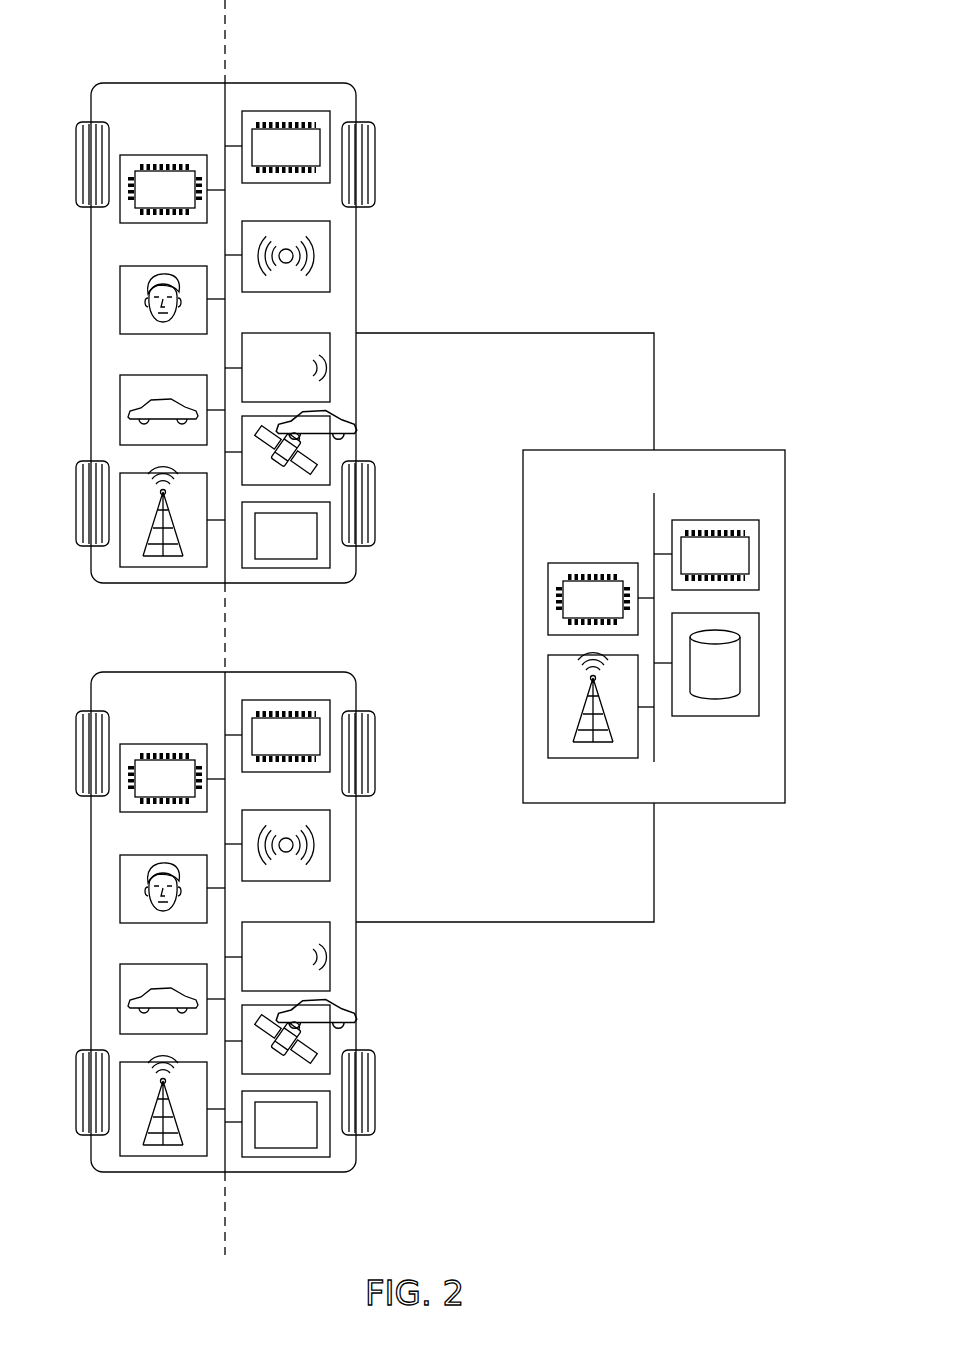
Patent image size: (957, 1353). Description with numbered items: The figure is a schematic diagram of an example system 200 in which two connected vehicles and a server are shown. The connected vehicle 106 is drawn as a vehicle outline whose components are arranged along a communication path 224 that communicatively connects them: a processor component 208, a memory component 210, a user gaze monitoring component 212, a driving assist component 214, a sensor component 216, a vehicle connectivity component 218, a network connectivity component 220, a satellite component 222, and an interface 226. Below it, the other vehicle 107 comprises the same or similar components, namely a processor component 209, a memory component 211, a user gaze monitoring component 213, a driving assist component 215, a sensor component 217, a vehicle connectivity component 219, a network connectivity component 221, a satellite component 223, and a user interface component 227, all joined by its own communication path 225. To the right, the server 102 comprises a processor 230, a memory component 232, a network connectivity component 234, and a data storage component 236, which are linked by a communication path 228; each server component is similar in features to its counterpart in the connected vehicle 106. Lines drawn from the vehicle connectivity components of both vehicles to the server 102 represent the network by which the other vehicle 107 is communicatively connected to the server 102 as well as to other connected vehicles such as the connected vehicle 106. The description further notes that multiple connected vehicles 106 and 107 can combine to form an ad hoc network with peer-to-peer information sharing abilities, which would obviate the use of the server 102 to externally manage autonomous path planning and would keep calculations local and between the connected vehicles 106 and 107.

The server 102 is at (723, 450).
The connected vehicle 106 is at (140, 83).
The other vehicle 107 is at (225, 895).
The system 200 is at (676, 78).
The processor component 208 is at (165, 155).
The processor component 209 is at (172, 750).
The memory component 210 is at (285, 111).
The memory component 211 is at (280, 705).
The user gaze monitoring component 212 is at (188, 266).
The user gaze monitoring component 213 is at (172, 870).
The driving assist component 214 is at (188, 375).
The driving assist component 215 is at (172, 981).
The sensor component 216 is at (256, 221).
The sensor component 217 is at (281, 829).
The vehicle connectivity component 218 is at (256, 333).
The vehicle connectivity component 219 is at (291, 956).
The network connectivity component 220 is at (165, 567).
The network connectivity component 221 is at (172, 1132).
The satellite component 222 is at (332, 454).
The satellite component 223 is at (322, 1039).
The communication path 224 is at (223, 103).
The communication path 225 is at (196, 905).
The interface 226 is at (287, 568).
The user interface component 227 is at (277, 1153).
The communication path 228 is at (656, 730).
The processor 230 is at (597, 563).
The memory component 232 is at (715, 520).
The network connectivity component 234 is at (548, 710).
The data storage component 236 is at (760, 662).